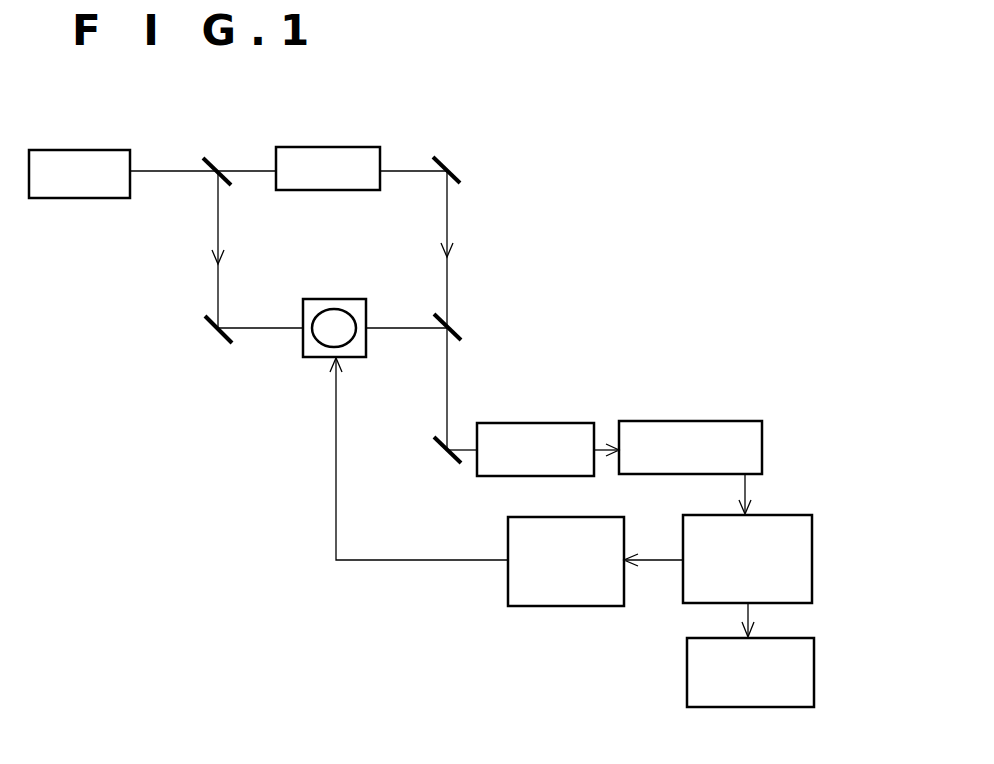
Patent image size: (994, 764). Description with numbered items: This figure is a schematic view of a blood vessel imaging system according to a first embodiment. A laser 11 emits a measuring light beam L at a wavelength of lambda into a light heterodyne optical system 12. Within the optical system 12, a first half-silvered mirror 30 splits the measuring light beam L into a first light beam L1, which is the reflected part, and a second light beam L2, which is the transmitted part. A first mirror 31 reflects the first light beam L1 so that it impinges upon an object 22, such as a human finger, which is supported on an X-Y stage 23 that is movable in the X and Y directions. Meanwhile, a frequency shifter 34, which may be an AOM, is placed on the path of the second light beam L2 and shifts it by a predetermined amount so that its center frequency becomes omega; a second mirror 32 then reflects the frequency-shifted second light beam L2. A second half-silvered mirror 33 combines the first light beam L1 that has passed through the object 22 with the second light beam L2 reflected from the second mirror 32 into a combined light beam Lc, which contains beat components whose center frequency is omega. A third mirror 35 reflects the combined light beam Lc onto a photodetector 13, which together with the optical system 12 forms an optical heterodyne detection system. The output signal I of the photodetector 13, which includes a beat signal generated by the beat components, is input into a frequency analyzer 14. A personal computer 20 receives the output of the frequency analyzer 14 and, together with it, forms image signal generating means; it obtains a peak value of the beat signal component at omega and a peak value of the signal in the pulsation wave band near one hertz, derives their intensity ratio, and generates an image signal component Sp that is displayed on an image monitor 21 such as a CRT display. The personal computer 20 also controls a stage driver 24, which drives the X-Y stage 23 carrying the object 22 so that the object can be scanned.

The laser 11 is at (80, 150).
The measuring light beam L is at (155, 171).
The first light beam L1 is at (218, 290).
The second light beam L2 is at (252, 171).
The combined light beam Lc is at (447, 383).
The first half-silvered mirror 30 is at (210, 160).
The frequency shifter 34 is at (332, 146).
The second mirror 32 is at (445, 160).
The first mirror 31 is at (210, 328).
The light heterodyne optical system 12 is at (186, 280).
The object 22 is at (334, 320).
The X-Y stage 23 is at (303, 355).
The second half-silvered mirror 33 is at (458, 336).
The third mirror 35 is at (434, 456).
The photodetector 13 is at (518, 423).
The output signal I is at (598, 448).
The frequency analyzer 14 is at (666, 421).
The personal computer 20 is at (812, 548).
The image signal component Sp is at (752, 612).
The image monitor 21 is at (814, 670).
The stage driver 24 is at (558, 606).